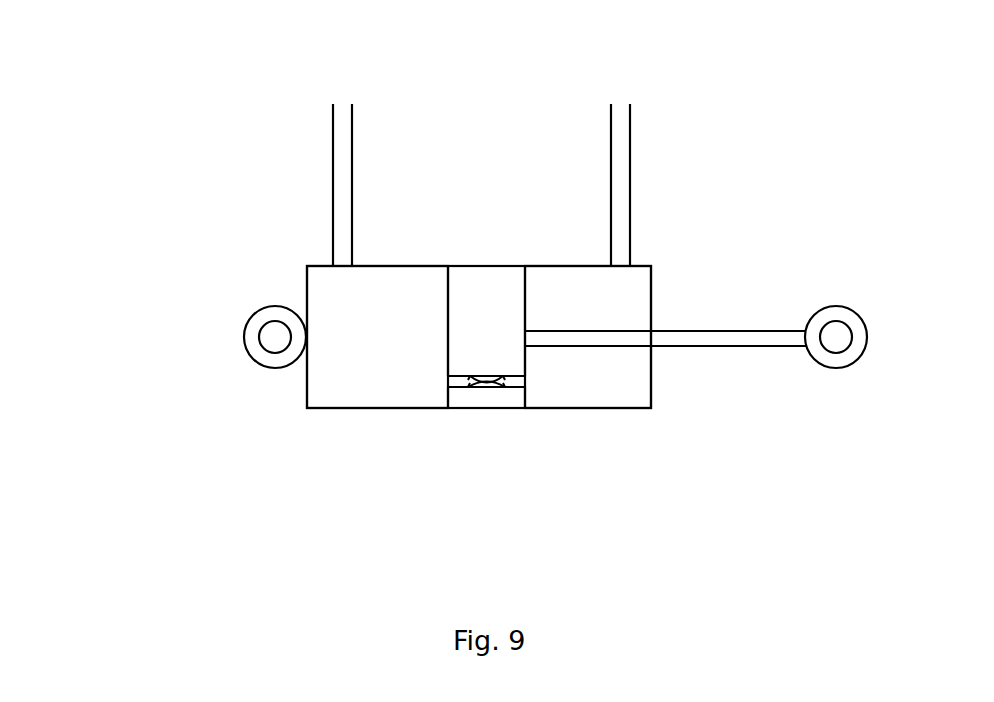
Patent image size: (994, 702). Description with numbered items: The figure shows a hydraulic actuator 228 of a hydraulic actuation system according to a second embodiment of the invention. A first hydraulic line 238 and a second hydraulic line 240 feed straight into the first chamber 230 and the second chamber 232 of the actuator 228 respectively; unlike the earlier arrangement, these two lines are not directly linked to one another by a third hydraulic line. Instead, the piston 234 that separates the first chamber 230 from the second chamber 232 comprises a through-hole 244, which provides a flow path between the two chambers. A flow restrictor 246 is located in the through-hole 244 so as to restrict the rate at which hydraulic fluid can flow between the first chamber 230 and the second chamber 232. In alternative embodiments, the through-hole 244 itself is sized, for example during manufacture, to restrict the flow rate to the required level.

The actuator 228 is at (277, 410).
The first chamber 230 is at (599, 308).
The second chamber 232 is at (414, 349).
The piston 234 is at (495, 290).
The first hydraulic line 238 is at (630, 129).
The second hydraulic line 240 is at (333, 128).
The through-hole 244 is at (455, 389).
The flow restrictor 246 is at (489, 390).